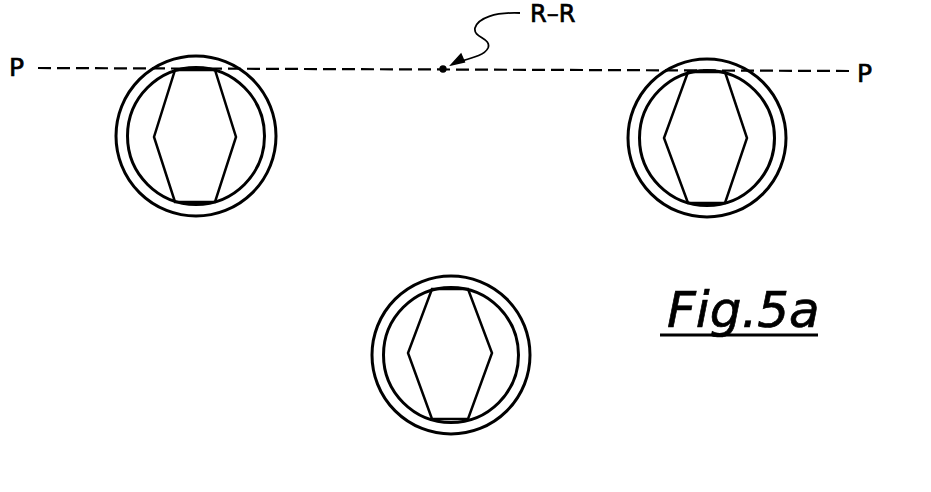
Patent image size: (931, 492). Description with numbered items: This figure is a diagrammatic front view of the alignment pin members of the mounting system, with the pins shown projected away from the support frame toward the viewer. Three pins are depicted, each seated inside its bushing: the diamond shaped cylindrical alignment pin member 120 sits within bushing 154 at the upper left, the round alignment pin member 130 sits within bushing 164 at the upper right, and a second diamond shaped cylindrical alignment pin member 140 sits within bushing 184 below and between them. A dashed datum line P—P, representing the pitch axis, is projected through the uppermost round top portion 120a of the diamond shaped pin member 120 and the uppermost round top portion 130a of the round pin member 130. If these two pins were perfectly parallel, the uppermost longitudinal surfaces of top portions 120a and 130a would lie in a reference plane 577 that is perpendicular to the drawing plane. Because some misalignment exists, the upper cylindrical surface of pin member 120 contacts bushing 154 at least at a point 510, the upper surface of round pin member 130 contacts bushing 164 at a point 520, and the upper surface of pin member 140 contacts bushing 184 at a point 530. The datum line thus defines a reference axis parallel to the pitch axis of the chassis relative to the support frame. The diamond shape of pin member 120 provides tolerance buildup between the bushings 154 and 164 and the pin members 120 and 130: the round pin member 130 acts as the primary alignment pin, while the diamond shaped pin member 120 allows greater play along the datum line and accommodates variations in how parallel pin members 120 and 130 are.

The reference plane 577 is at (110, 68).
The contact point 510 is at (157, 69).
The uppermost round top portion 120a is at (208, 66).
The diamond shaped cylindrical alignment pin member 120 is at (215, 133).
The bushing 154 is at (150, 200).
The contact point 520 is at (697, 71).
The uppermost round top portion 130a is at (735, 71).
The round alignment pin member 130 is at (706, 131).
The bushing 164 is at (656, 191).
The contact point 530 is at (449, 288).
The diamond shaped cylindrical alignment pin member 140 is at (421, 341).
The bushing 184 is at (410, 417).